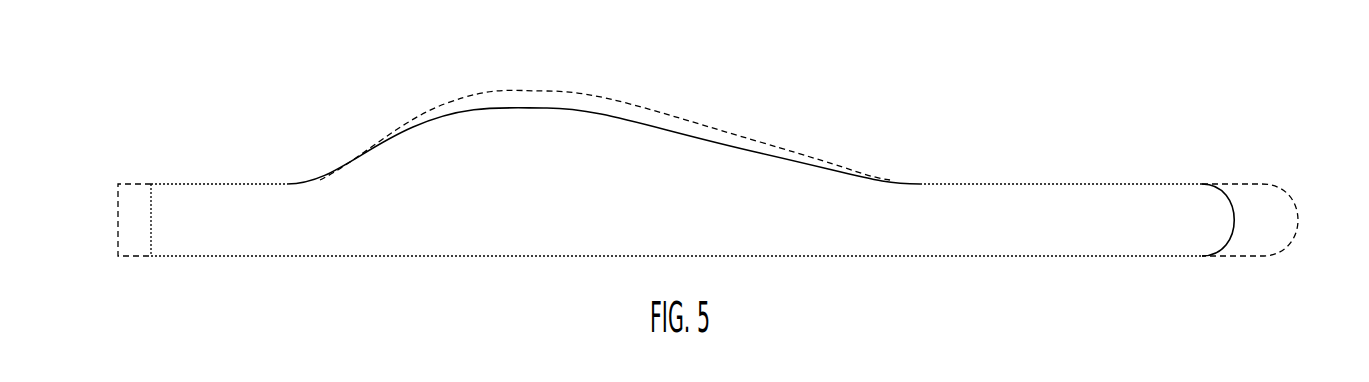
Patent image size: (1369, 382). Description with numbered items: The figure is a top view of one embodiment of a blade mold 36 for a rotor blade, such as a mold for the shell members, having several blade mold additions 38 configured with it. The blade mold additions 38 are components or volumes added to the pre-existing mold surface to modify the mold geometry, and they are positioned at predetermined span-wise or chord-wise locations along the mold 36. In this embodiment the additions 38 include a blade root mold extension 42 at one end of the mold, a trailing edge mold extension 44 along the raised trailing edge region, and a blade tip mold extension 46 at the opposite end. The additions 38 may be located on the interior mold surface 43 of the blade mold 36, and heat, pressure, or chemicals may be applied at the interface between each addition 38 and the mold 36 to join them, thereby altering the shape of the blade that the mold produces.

The blade mold 36 is at (927, 183).
The blade mold addition 38 is at (120, 182).
The blade root mold extension 42 is at (137, 183).
The interior mold surface 43 is at (565, 197).
The trailing edge mold extension 44 is at (563, 91).
The blade tip mold extension 46 is at (1226, 184).